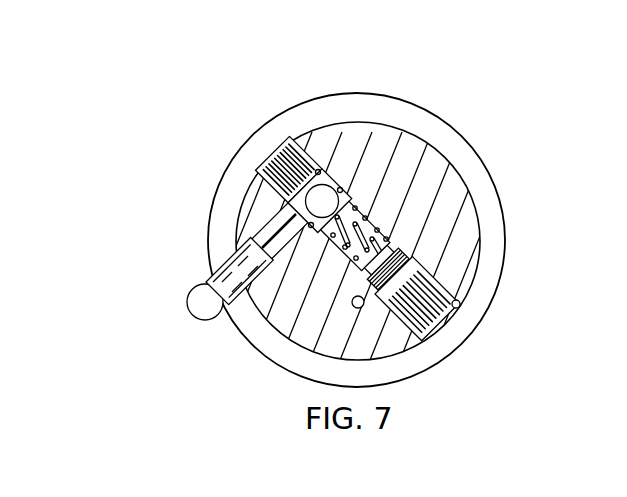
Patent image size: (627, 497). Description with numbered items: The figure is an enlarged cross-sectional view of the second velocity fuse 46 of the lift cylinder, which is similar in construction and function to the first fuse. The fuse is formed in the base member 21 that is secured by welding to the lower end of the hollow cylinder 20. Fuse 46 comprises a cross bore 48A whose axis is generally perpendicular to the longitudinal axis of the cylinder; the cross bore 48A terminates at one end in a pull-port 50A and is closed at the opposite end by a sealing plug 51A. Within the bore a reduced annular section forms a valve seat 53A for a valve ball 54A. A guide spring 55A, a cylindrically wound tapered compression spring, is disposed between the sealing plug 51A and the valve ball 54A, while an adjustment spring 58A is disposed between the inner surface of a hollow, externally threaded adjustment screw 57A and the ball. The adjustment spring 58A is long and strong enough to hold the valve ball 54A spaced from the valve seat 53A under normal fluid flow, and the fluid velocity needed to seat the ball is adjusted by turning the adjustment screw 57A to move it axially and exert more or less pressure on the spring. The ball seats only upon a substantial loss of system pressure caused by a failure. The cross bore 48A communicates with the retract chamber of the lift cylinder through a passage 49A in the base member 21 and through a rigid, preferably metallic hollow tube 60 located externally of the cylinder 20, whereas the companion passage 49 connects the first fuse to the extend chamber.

The hollow cylinder 20 is at (428, 112).
The base member 21 is at (450, 152).
The fuse 46 is at (446, 330).
The cross bore 48A is at (363, 225).
The passage 49 is at (353, 306).
The passage 49A is at (270, 240).
The pull-port 50A is at (461, 307).
The sealing plug 51A is at (276, 152).
The valve seat 53A is at (345, 200).
The valve ball 54A is at (337, 192).
The guide spring 55A is at (336, 186).
The adjustment screw 57A is at (398, 257).
The adjustment spring 58A is at (382, 250).
The hollow tube 60 is at (187, 309).